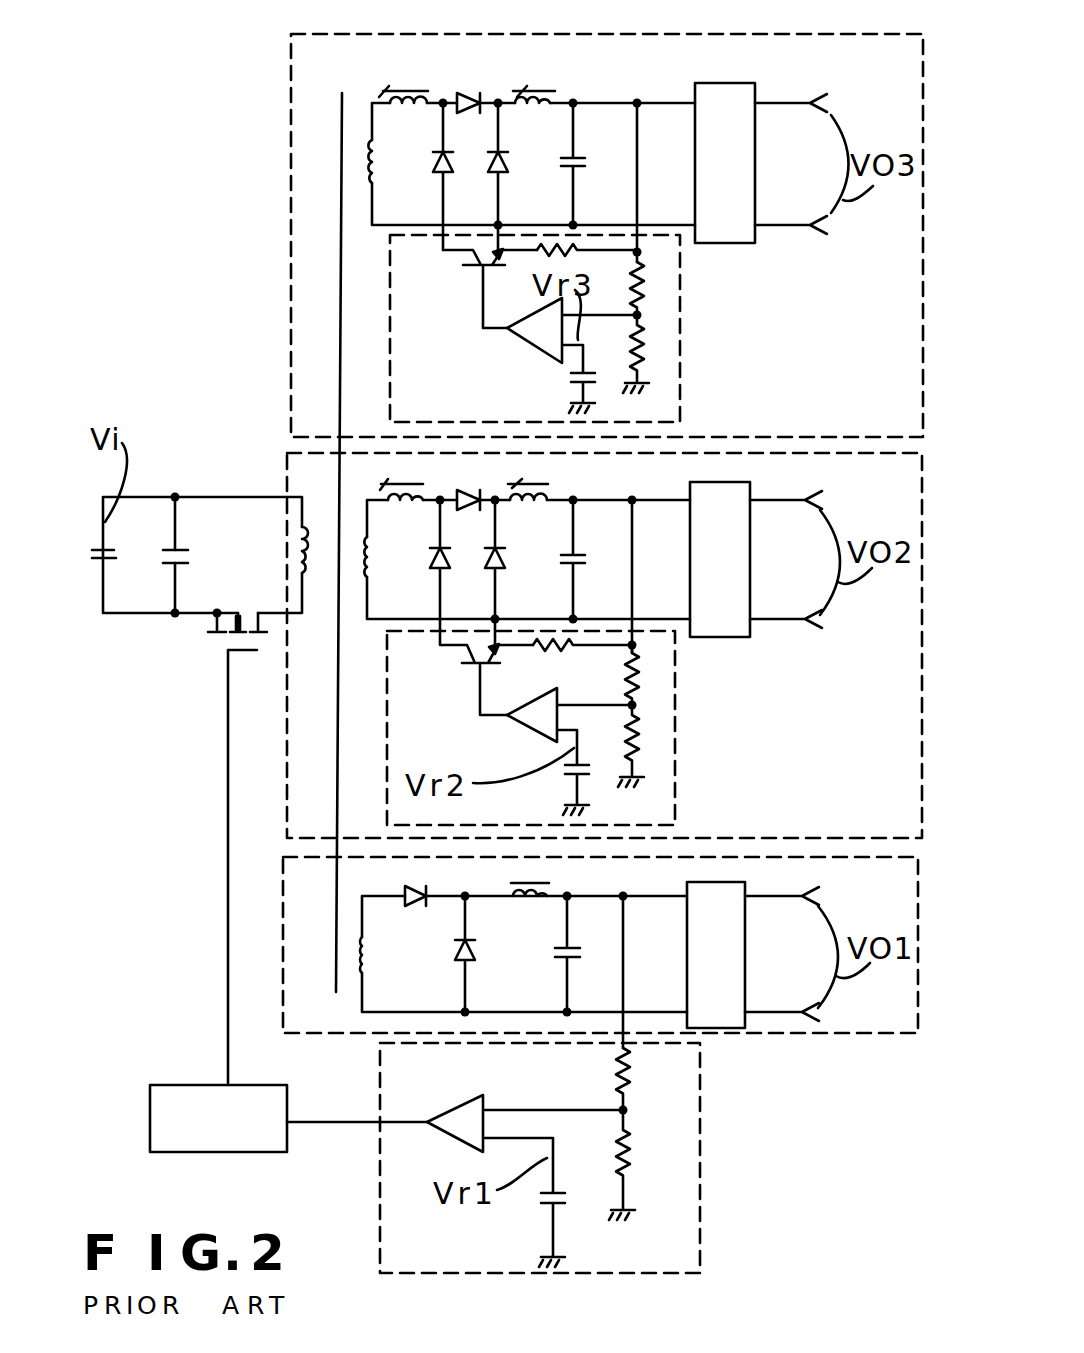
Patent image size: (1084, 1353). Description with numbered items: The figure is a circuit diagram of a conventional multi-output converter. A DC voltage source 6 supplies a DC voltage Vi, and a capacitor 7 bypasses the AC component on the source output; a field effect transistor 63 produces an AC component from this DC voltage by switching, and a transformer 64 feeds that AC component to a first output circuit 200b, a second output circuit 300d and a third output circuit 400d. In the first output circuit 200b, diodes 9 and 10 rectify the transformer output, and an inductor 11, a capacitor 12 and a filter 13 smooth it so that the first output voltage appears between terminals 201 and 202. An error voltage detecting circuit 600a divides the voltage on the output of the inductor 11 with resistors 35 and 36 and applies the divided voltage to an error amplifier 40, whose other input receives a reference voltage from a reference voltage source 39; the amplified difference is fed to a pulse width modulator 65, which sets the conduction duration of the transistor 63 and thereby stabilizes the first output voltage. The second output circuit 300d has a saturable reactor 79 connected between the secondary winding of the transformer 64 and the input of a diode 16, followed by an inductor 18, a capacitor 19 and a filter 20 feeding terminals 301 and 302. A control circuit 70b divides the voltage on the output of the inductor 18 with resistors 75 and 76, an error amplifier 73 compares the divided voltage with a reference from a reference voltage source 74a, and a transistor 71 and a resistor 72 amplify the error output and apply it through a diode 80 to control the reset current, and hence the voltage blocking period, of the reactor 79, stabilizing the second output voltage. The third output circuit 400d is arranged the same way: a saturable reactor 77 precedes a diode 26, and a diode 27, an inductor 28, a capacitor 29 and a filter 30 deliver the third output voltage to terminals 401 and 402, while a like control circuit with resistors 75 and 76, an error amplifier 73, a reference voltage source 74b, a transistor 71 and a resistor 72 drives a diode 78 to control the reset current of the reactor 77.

The DC voltage source 6 is at (117, 556).
The capacitor 7 is at (193, 557).
The field effect transistor 63 is at (213, 618).
The transformer 64 is at (340, 357).
The pulse width modulator 65 is at (193, 1085).
The third output circuit 400d is at (290, 175).
The second output circuit 300d is at (285, 709).
The first output circuit 200b is at (283, 882).
The error voltage detecting circuit 600a is at (702, 1140).
The control circuit 70b is at (676, 732).
The saturable reactor 77 is at (398, 84).
The diode 26 is at (470, 90).
The inductor 28 is at (533, 86).
The smoothing capacitor 29 is at (586, 167).
The diode 78 is at (440, 176).
The flywheel diode 27 is at (492, 165).
The resistor 72 is at (551, 250).
The transistor 71 is at (452, 256).
The error amplifier 73 is at (500, 345).
The reference voltage source 74b is at (572, 378).
The reference voltage source 74a is at (560, 775).
The resistor 75 is at (640, 288).
The resistor 76 is at (640, 352).
The filter 30 is at (757, 178).
The output terminal 401 is at (829, 101).
The output terminal 402 is at (829, 228).
The saturable reactor 79 is at (412, 503).
The diode 16 is at (461, 503).
The inductor 18 is at (530, 507).
The smoothing capacitor 19 is at (586, 562).
The diode 80 is at (430, 560).
The filter 20 is at (752, 578).
The output terminal 301 is at (824, 498).
The output terminal 302 is at (824, 622).
The diode 9 is at (418, 903).
The inductor 11 is at (533, 912).
The diode 10 is at (457, 956).
The capacitor 12 is at (557, 956).
The filter 13 is at (747, 970).
The terminal 201 is at (821, 894).
The terminal 202 is at (821, 1014).
The error amplifier 40 is at (455, 1105).
The resistor 35 is at (620, 1067).
The resistor 36 is at (625, 1163).
The reference voltage source 39 is at (543, 1200).